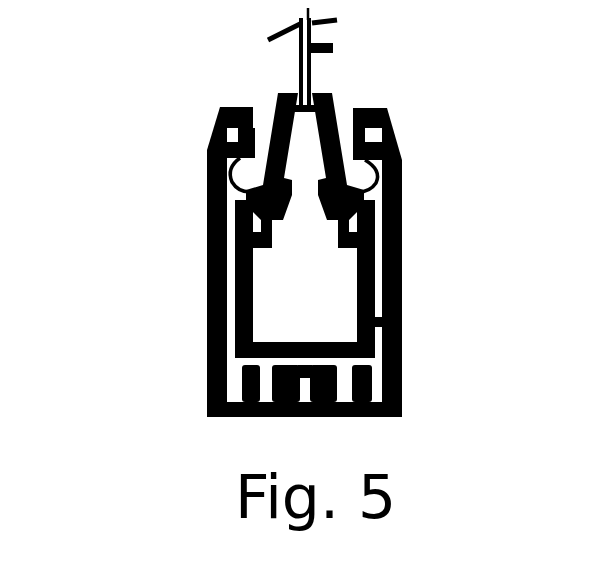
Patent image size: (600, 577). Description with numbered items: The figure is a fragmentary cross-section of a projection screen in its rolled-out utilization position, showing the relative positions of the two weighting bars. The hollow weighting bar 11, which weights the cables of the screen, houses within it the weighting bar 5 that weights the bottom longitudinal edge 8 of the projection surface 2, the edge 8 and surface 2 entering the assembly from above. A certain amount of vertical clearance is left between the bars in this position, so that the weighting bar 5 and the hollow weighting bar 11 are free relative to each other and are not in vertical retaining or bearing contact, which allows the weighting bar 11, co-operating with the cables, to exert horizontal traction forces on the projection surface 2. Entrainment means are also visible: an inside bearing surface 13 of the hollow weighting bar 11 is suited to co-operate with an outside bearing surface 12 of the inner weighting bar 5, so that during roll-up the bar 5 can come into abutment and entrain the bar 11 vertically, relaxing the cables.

The projection surface 2 is at (378, 30).
The weighting bar 5 is at (402, 339).
The bottom longitudinal edge 8 is at (310, 88).
The weighting bar 11 is at (402, 273).
The outside bearing surface 12 is at (210, 207).
The inside bearing surface 13 is at (208, 171).